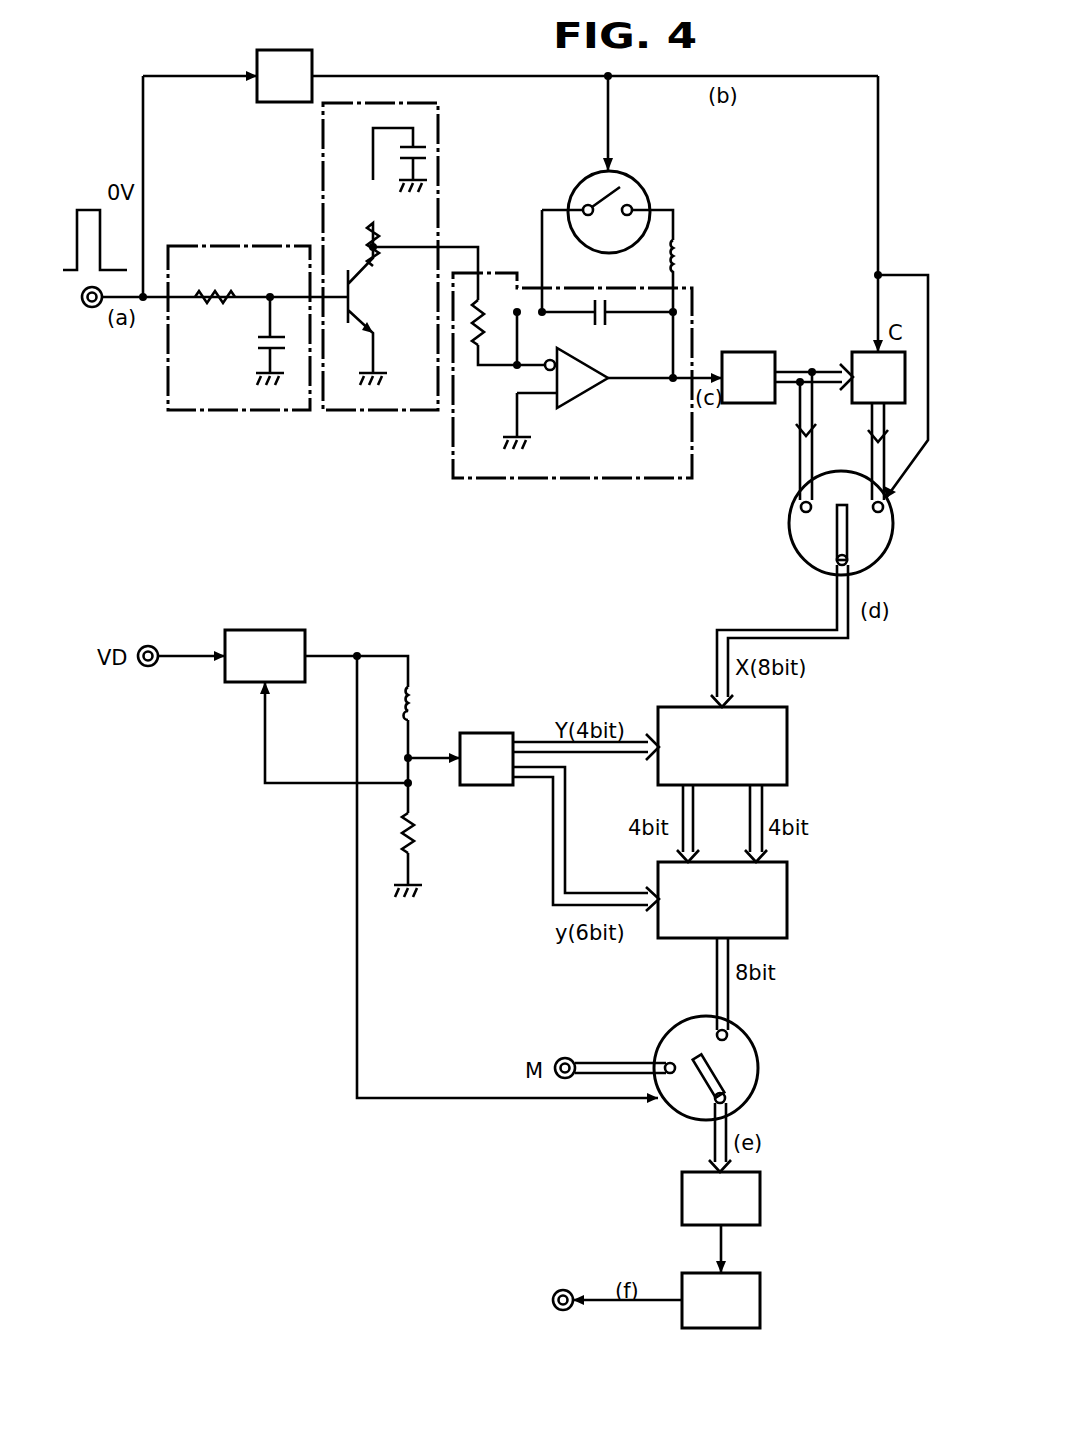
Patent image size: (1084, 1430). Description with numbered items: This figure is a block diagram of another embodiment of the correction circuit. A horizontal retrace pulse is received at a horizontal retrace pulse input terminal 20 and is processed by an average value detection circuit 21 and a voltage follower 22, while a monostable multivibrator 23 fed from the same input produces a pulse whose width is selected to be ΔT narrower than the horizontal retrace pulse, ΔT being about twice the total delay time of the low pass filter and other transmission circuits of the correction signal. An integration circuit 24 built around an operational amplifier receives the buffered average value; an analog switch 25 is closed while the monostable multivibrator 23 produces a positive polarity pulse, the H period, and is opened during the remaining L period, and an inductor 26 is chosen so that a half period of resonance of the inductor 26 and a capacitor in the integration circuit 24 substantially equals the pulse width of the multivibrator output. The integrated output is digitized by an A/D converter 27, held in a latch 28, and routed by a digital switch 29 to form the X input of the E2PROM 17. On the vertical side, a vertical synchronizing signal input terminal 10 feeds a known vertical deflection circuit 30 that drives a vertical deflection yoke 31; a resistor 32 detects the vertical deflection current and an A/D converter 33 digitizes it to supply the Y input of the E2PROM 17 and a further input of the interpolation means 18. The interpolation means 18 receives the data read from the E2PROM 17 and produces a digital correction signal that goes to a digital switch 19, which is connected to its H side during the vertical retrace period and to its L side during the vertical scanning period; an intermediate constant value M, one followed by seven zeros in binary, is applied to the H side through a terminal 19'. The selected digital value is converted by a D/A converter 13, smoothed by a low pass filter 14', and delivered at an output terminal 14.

The vertical synchronizing signal input terminal 10 is at (148, 643).
The D/A converter 13 is at (760, 1197).
The output terminal 14 is at (565, 1271).
The low pass filter 14' is at (758, 1300).
The E2PROM 17 is at (787, 745).
The interpolation means 18 is at (787, 898).
The digital switch 19 is at (740, 1094).
The terminal 19' is at (607, 1038).
The horizontal retrace pulse input terminal 20 is at (92, 308).
The average value detection circuit 21 is at (210, 412).
The voltage follower 22 is at (360, 412).
The monostable multivibrator 23 is at (278, 102).
The integration circuit 24 is at (495, 480).
The analog switch 25 is at (641, 180).
The inductor 26 is at (684, 255).
The A/D converter 27 is at (750, 352).
The latch 28 is at (857, 350).
The digital switch 29 is at (787, 528).
The vertical deflection circuit 30 is at (268, 628).
The vertical deflection yoke 31 is at (412, 702).
The resistor 32 is at (418, 833).
The A/D converter 33 is at (488, 730).